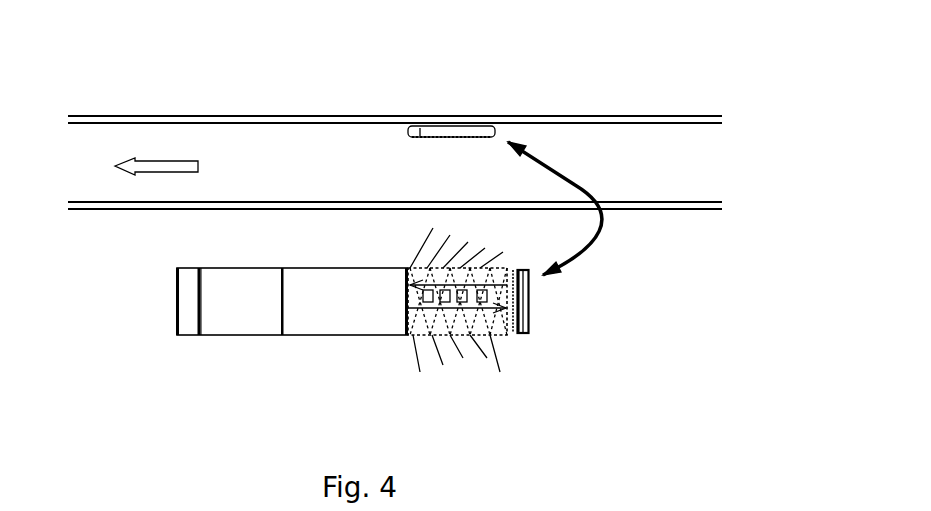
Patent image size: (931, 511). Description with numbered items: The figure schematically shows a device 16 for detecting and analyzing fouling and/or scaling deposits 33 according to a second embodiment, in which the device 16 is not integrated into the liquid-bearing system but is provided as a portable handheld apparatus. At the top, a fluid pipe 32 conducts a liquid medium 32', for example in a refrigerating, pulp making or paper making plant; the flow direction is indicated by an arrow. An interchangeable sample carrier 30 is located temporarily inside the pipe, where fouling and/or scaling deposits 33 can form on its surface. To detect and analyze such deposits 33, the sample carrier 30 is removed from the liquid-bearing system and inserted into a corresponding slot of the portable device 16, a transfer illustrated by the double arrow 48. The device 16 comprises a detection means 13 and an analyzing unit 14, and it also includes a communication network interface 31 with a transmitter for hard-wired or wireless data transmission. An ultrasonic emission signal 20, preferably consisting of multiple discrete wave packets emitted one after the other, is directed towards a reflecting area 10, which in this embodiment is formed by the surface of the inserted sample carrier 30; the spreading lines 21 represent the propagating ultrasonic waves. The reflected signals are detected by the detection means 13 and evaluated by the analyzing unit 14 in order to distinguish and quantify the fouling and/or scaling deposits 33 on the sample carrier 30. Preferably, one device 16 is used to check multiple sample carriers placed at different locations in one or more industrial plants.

The reflecting area 10 is at (536, 277).
The detection means 13 is at (248, 322).
The analyzing unit 14 is at (365, 313).
The device 16 is at (150, 317).
The ultrasonic emission signal 20 is at (488, 340).
The spray jet 21 is at (427, 353).
The sample carrier 30 is at (475, 130).
The communication network interface 31 is at (187, 328).
The fluid pipe 32 is at (395, 73).
The liquid medium 32' is at (395, 116).
The fouling and/or scaling deposits 33 is at (422, 135).
The double arrow 48 is at (570, 172).